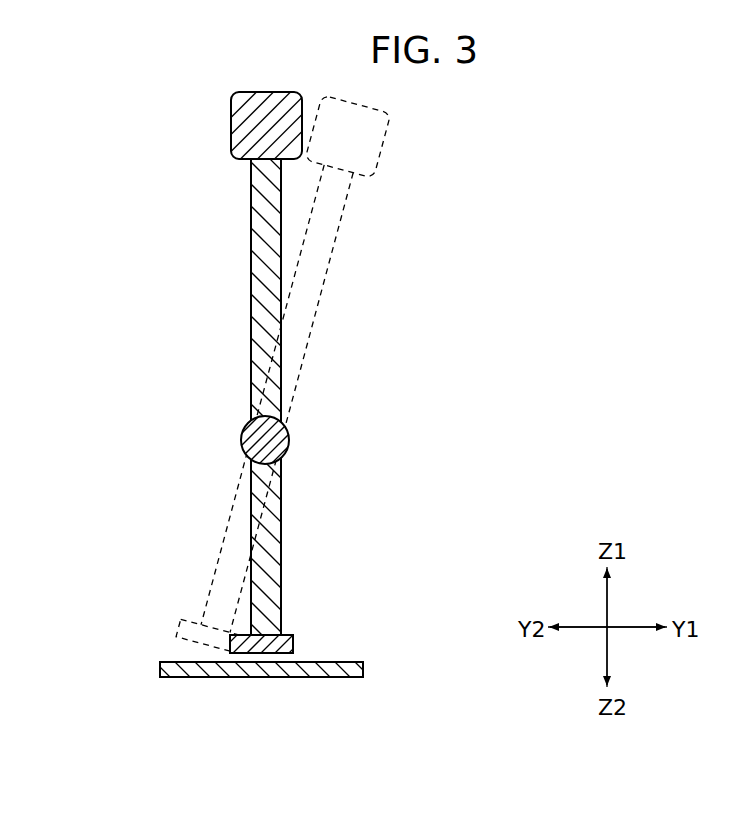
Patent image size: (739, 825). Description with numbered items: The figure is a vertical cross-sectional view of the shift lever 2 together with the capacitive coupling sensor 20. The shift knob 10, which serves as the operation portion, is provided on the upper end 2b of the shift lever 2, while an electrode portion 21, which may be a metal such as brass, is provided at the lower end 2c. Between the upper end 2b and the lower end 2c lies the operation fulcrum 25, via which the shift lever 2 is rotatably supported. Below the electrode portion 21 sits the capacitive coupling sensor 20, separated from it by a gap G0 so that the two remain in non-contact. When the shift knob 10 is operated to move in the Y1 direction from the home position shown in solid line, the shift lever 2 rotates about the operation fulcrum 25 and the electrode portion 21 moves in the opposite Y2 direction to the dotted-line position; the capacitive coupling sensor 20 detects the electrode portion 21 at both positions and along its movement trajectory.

The shift knob 10 is at (240, 113).
The shift lever 2 is at (263, 253).
The upper end 2b is at (226, 175).
The operation fulcrum 25 is at (280, 440).
The electrode portion 21 is at (180, 630).
The lower end 2c is at (261, 648).
The gap G0 is at (300, 657).
The capacitive coupling sensor 20 is at (317, 676).